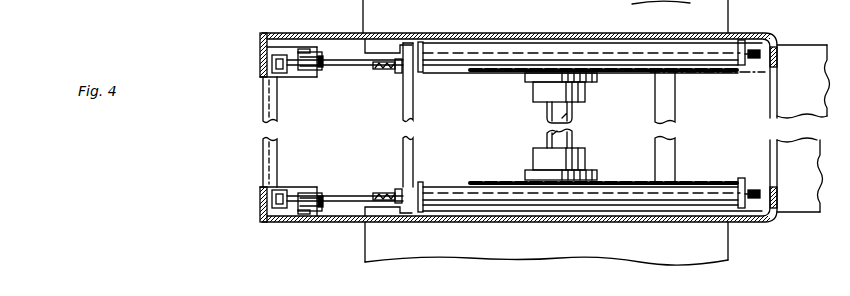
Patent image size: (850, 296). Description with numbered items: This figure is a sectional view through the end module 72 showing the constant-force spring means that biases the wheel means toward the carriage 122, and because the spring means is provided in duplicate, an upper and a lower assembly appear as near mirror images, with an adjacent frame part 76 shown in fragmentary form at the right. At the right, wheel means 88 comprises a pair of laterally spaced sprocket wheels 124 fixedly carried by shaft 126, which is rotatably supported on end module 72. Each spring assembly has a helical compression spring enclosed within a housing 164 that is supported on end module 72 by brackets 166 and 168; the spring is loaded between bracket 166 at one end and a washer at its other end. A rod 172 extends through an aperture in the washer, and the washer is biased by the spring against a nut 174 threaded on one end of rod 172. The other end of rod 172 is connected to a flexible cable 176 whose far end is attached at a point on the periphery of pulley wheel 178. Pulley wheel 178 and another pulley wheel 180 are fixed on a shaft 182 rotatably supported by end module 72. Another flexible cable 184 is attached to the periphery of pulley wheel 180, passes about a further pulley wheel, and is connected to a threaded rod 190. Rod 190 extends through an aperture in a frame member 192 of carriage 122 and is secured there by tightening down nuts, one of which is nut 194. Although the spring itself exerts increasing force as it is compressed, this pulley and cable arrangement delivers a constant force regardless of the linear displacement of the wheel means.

The end module 72 is at (256, 88).
The support plate 76 is at (801, 47).
The wheel means 88 is at (701, 100).
The carriage 122 is at (676, 160).
The sprocket wheels 124 is at (500, 76).
The shaft 126 is at (572, 110).
The housing 164 is at (453, 66).
The bracket 166 is at (401, 72).
The bracket 168 is at (742, 65).
The rod 172 is at (756, 50).
The nut 174 is at (746, 72).
The flexible cable 176 is at (339, 56).
The pulley wheel 178 is at (322, 56).
The pulley wheel 180 is at (292, 74).
The shaft 182 is at (303, 78).
The flexible cable 184 is at (351, 67).
The threaded rod 190 is at (387, 70).
The frame member 192 is at (406, 146).
The nut 194 is at (398, 75).